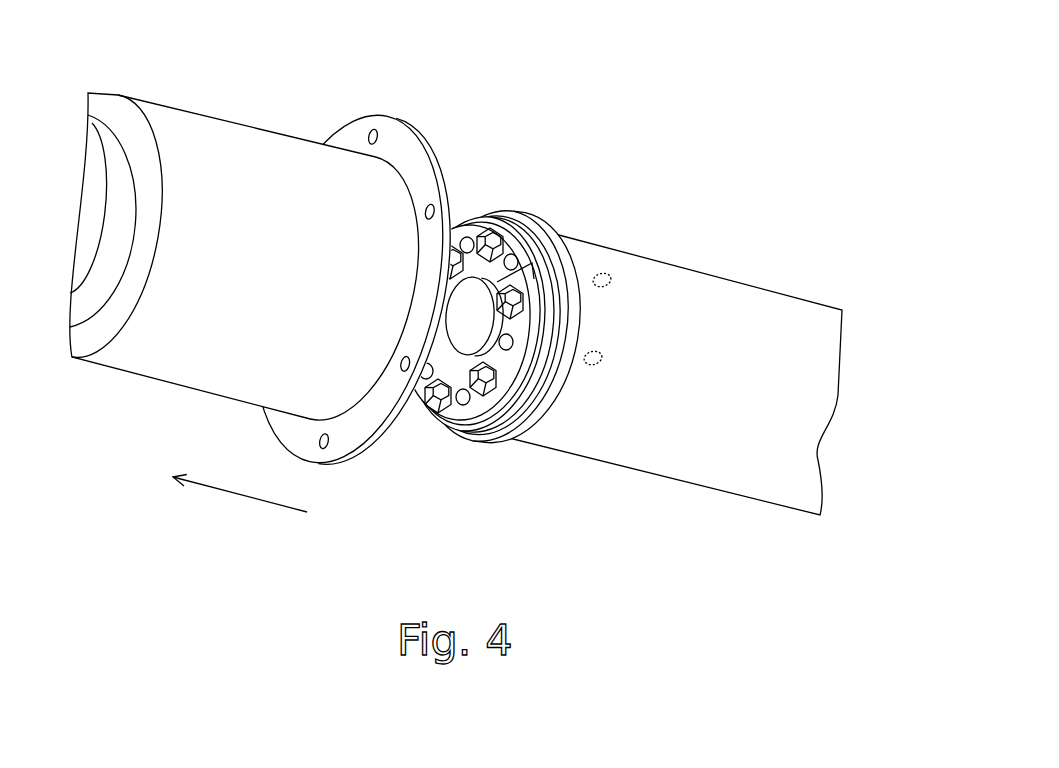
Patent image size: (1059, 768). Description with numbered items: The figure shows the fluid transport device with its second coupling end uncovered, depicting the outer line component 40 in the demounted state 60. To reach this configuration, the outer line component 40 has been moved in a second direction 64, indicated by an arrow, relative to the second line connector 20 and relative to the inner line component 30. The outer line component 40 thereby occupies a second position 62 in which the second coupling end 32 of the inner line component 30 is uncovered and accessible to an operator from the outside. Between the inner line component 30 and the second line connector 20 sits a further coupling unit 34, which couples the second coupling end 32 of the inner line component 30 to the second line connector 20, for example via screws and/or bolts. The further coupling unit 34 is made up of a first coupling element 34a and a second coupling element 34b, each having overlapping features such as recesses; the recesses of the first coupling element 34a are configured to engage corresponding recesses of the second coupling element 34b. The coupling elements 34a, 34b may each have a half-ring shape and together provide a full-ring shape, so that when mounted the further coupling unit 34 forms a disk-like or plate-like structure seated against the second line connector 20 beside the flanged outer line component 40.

The second line connector 20 is at (728, 327).
The inner line component 30 is at (461, 348).
The second coupling end 32 is at (467, 290).
The further coupling unit 34 is at (521, 361).
The first coupling element 34a is at (515, 246).
The second coupling element 34b is at (512, 360).
The outer line component 40 is at (243, 142).
The demounted state 60 is at (684, 309).
The second position 62 is at (684, 309).
The second direction 64 is at (236, 497).